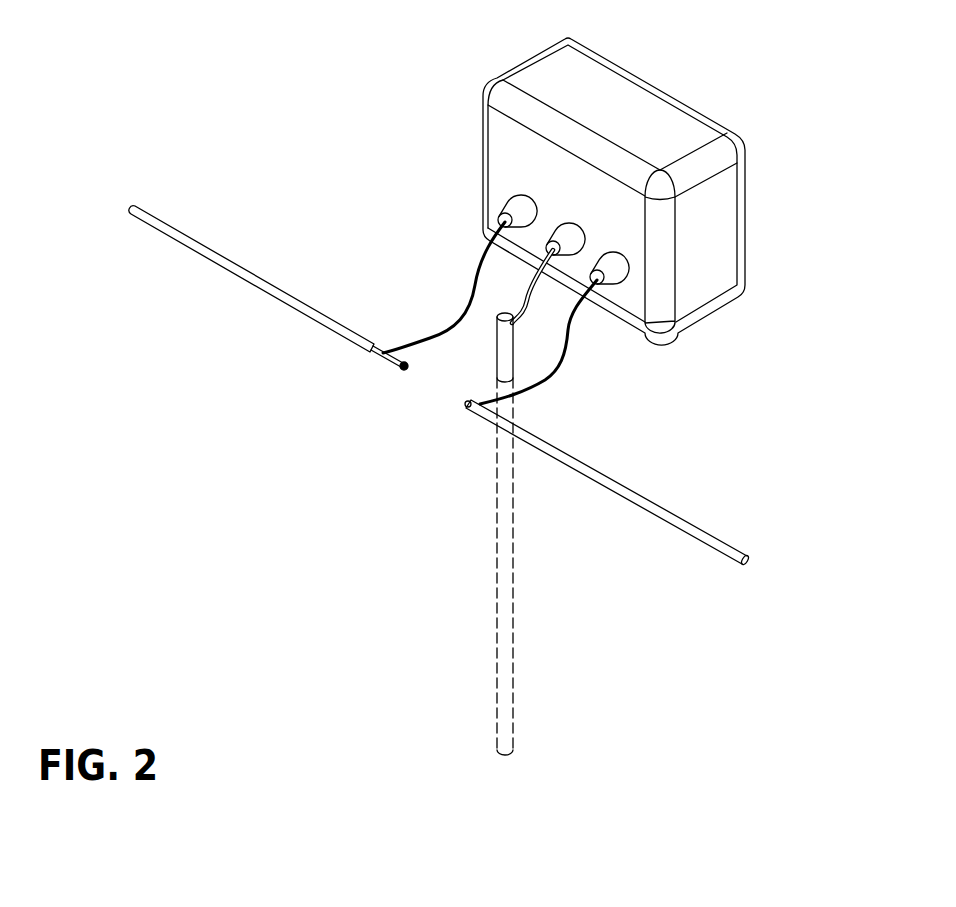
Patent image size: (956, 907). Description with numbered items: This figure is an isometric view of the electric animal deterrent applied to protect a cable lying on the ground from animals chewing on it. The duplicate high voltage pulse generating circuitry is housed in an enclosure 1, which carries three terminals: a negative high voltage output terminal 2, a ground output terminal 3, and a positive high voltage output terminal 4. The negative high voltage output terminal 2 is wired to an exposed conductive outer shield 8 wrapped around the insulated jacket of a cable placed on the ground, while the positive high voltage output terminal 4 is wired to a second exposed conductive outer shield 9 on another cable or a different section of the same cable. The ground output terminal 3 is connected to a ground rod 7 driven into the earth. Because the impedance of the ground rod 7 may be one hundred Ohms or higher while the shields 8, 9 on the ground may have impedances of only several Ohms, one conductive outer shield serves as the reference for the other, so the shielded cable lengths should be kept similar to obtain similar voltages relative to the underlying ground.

The enclosure 1 is at (555, 80).
The negative high voltage output terminal 2 is at (500, 220).
The ground output terminal 3 is at (547, 248).
The positive high voltage output terminal 4 is at (598, 284).
The ground rod 7 is at (505, 338).
The exposed conductive outer shield 8 is at (245, 285).
The exposed conductive outer shield 9 is at (625, 483).